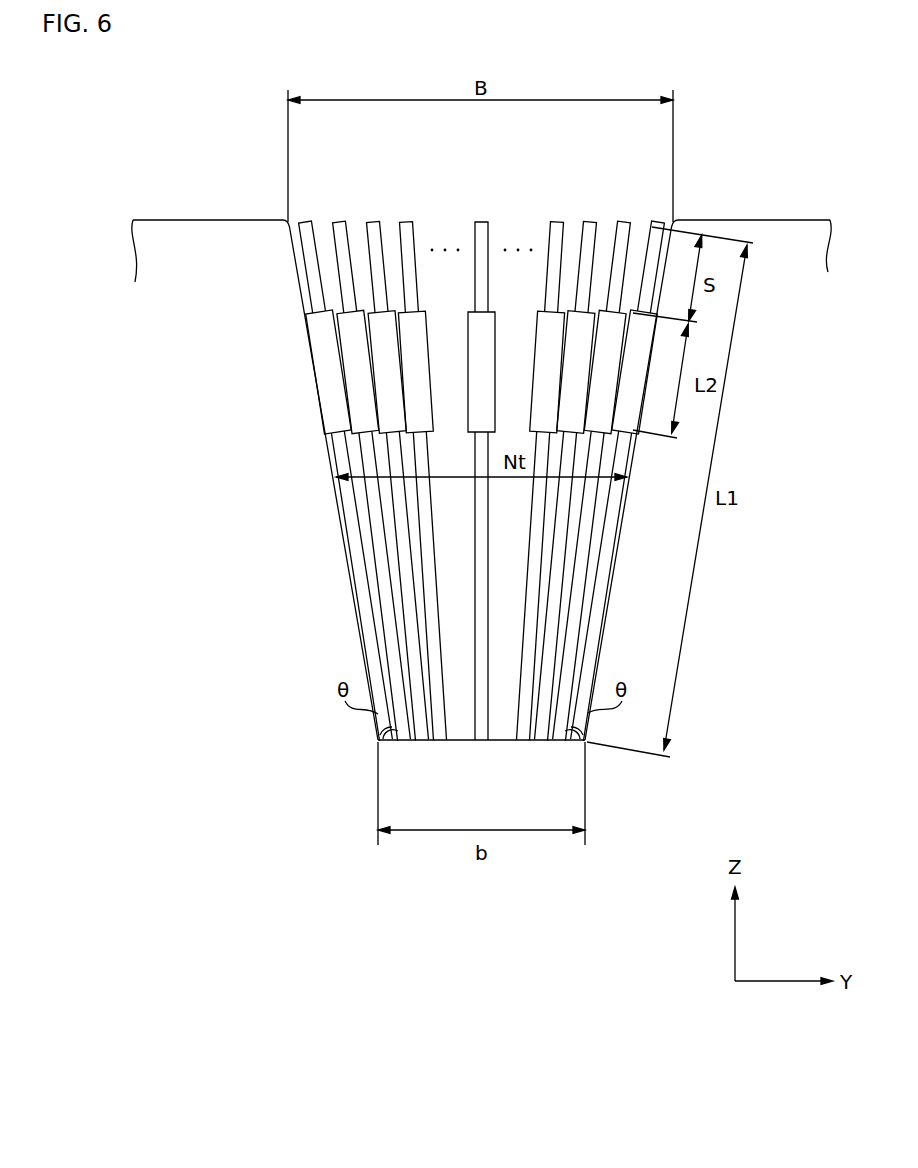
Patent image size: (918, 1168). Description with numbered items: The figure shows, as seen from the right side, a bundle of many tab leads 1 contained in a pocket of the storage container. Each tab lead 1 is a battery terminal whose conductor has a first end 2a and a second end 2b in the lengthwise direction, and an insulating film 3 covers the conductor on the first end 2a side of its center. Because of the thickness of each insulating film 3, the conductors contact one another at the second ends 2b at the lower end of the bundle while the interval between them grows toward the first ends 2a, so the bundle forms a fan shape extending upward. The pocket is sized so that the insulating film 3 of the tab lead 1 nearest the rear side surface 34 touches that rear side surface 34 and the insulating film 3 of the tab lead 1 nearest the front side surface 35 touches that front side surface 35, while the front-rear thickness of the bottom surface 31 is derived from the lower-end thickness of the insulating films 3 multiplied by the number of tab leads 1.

The tab lead 1 is at (373, 208).
The first end 2a is at (302, 222).
The second end 2b is at (390, 744).
The insulating film 3 is at (327, 361).
The bottom surface 31 is at (503, 742).
The rear side surface 34 is at (356, 531).
The front side surface 35 is at (613, 506).